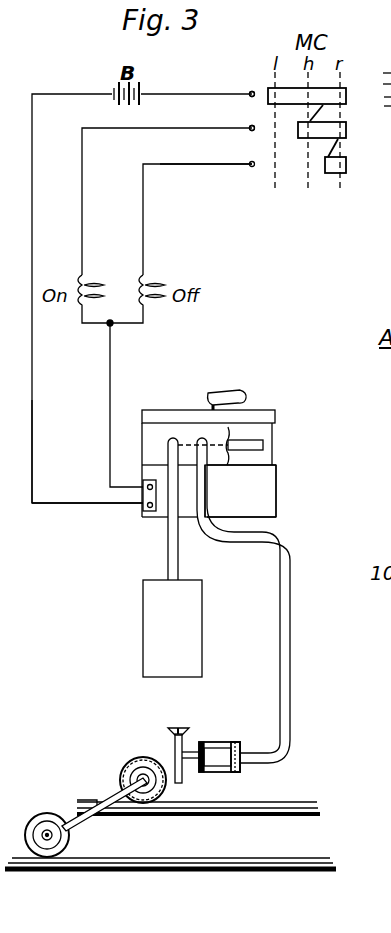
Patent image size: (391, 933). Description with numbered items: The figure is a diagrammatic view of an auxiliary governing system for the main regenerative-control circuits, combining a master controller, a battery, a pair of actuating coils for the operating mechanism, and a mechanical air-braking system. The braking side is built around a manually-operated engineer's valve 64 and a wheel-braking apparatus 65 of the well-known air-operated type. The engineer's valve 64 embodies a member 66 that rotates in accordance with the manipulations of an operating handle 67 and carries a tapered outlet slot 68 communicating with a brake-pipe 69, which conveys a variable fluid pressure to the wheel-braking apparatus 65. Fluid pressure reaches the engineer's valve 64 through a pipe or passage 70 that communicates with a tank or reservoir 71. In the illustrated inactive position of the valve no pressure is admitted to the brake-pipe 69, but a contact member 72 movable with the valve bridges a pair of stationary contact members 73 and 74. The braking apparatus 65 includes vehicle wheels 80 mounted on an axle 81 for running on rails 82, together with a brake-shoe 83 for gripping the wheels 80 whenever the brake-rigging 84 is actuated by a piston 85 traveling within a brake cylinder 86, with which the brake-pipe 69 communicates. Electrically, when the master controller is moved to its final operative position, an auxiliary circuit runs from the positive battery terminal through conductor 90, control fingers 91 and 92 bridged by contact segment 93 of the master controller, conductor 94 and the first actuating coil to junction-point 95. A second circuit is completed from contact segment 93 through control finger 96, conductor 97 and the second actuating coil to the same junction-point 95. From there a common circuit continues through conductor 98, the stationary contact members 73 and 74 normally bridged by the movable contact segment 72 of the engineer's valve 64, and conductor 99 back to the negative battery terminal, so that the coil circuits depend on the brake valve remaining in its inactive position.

The engineer's valve 64 is at (190, 394).
The wheel-braking apparatus 65 is at (105, 762).
The member 66 is at (276, 468).
The operating handle 67 is at (240, 392).
The tapered outlet slot 68 is at (273, 428).
The brake-pipe 69 is at (275, 532).
The pipe or passage 70 is at (168, 541).
The tank or reservoir 71 is at (143, 624).
The contact member 72 is at (145, 480).
The stationary contact member 73 is at (148, 489).
The stationary contact member 74 is at (143, 509).
The vehicle wheels 80 is at (58, 803).
The axle 81 is at (77, 822).
The rails 82 is at (107, 871).
The brake-shoe 83 is at (175, 752).
The brake-rigging 84 is at (186, 740).
The piston 85 is at (238, 742).
The brake cylinder 86 is at (214, 773).
The conductor 90 is at (160, 94).
The control finger 91 is at (252, 93).
The control finger 92 is at (252, 127).
The contact segment 93 is at (347, 97).
The conductor 94 is at (150, 128).
The junction-point 95 is at (108, 326).
The control finger 96 is at (252, 163).
The conductor 97 is at (232, 166).
The conductor 98 is at (109, 424).
The conductor 99 is at (90, 504).